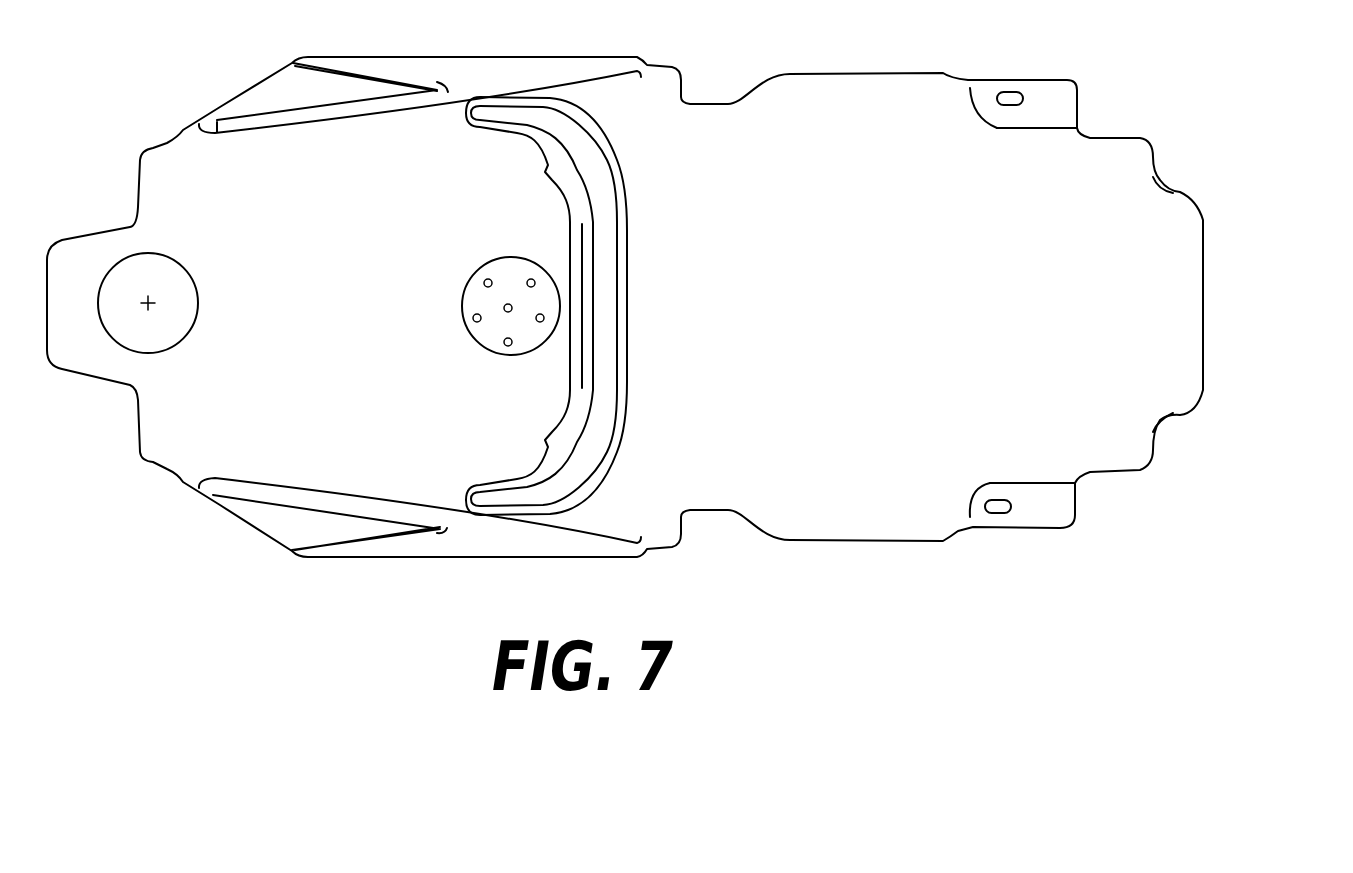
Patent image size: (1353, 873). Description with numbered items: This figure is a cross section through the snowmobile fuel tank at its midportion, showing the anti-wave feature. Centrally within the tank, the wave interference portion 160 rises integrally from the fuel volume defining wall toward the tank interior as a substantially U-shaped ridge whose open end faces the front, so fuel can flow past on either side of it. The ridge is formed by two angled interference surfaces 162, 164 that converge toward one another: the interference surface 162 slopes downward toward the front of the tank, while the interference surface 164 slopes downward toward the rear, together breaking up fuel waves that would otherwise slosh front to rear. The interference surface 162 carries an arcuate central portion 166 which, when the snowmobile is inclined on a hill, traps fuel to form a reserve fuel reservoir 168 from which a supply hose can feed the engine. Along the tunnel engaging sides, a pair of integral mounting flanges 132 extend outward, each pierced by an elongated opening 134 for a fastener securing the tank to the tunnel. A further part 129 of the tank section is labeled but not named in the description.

The mounting plate 129 is at (1203, 293).
The mounting flange 132 is at (1057, 97).
The elongated opening 134 is at (1010, 97).
The wave interference portion 160 is at (628, 192).
The angled interference surface 162 is at (570, 363).
The angled interference surface 164 is at (627, 303).
The arcuate central portion 166 is at (570, 256).
The reserve fuel reservoir 168 is at (462, 283).